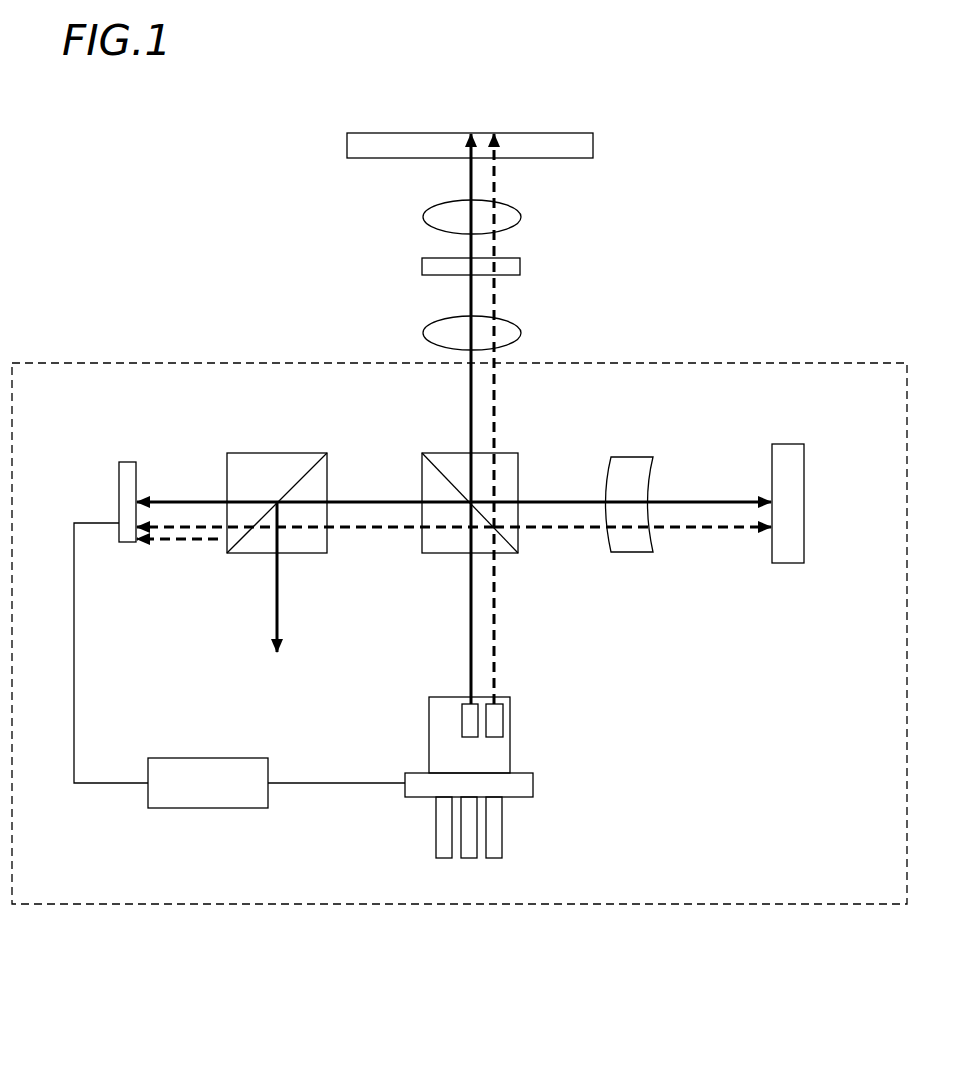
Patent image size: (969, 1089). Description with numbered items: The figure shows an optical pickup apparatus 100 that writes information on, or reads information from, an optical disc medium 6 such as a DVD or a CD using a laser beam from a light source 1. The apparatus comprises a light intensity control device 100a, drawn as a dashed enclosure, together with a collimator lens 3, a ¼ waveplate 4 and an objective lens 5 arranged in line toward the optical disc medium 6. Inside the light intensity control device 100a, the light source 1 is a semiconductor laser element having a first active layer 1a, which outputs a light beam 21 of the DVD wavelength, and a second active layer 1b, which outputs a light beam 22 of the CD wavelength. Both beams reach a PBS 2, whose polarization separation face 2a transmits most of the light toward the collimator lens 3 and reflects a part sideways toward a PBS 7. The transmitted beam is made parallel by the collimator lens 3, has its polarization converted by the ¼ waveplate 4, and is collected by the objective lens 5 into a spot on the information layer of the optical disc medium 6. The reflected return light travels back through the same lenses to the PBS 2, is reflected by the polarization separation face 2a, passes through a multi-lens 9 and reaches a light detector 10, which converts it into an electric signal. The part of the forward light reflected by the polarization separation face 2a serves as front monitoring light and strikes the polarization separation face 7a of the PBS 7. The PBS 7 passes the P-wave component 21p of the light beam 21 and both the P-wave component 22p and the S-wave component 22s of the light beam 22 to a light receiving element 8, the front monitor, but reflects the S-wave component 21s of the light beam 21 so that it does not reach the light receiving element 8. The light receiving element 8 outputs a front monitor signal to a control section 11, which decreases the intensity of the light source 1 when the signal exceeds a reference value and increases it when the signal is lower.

The optical pickup apparatus 100 is at (720, 178).
The light intensity control device 100a is at (812, 363).
The light source 1 is at (429, 733).
The first active layer 1a is at (462, 722).
The second active layer 1b is at (503, 722).
The PBS 2 is at (422, 543).
The polarization separation face 2a is at (448, 479).
The collimator lens 3 is at (521, 333).
The ¼ waveplate 4 is at (422, 267).
The objective lens 5 is at (422, 217).
The optical disc medium 6 is at (593, 147).
The PBS 7 is at (262, 453).
The polarization separation face 7a is at (305, 470).
The light receiving element 8 is at (119, 503).
The multi-lens 9 is at (630, 457).
The light detector 10 is at (790, 444).
The control section 11 is at (207, 808).
The light beam 21 is at (471, 628).
The P-wave component 21p is at (180, 500).
The S-wave component 21s is at (277, 634).
The light beam 22 is at (494, 648).
The P-wave component 22p is at (172, 538).
The S-wave component 22s is at (208, 539).